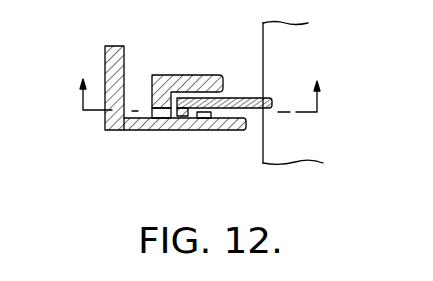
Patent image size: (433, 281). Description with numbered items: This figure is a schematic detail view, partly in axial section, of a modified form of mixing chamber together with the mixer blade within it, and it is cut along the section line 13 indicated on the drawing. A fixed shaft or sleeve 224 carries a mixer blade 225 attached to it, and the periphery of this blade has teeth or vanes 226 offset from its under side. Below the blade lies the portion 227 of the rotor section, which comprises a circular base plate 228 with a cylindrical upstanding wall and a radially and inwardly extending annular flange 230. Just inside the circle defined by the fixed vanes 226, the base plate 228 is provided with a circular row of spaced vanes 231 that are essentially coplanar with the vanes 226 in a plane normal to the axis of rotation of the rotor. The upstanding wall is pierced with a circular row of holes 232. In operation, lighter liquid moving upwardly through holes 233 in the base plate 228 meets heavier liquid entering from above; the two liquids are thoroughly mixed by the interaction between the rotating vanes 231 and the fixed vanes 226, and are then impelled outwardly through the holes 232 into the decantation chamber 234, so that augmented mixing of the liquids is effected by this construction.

The section line 13- 13 is at (201, 97).
The fixed shaft or sleeve 224 is at (292, 32).
The mixer blade 225 is at (247, 97).
The teeth or vanes 226 is at (178, 117).
The portion of the rotor section 227 is at (123, 83).
The circular base plate 228 is at (142, 131).
The annular flange 230 is at (203, 75).
The spaced vanes 231 is at (204, 118).
The holes 232 is at (155, 103).
The holes 233 is at (218, 131).
The decantation chamber 234 is at (131, 78).